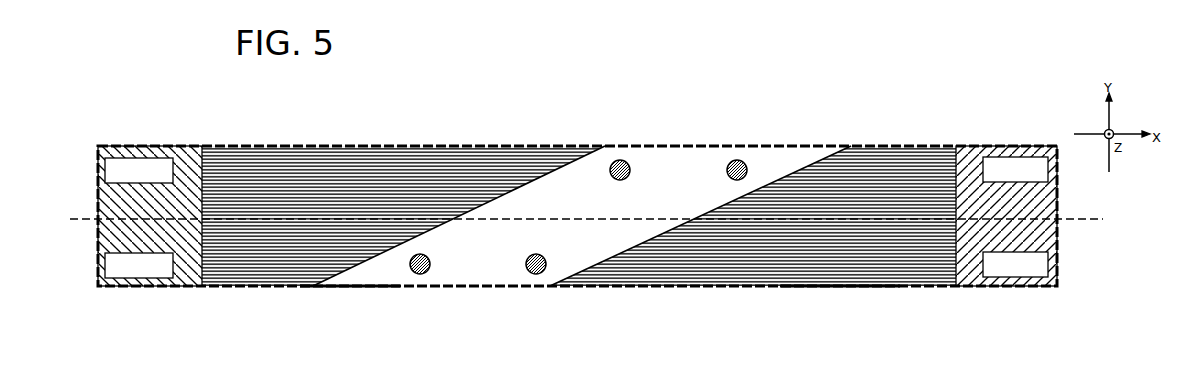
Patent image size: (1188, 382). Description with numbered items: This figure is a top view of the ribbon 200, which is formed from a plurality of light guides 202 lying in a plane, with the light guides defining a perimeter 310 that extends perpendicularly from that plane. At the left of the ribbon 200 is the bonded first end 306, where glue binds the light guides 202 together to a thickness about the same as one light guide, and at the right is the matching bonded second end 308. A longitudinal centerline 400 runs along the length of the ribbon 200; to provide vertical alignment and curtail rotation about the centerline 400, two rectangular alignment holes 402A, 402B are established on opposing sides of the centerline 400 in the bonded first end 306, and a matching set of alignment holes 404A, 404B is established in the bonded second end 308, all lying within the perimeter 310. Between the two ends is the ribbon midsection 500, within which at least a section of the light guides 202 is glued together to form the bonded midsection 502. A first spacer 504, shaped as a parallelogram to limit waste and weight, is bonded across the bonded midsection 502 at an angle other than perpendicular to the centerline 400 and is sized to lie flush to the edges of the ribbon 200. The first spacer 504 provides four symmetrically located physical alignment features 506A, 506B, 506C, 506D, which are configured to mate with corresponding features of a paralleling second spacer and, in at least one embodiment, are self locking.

The ribbon 200 is at (781, 95).
The light guides 202 is at (833, 288).
The bonded first end 306 is at (177, 146).
The bonded second end 308 is at (984, 148).
The perimeter 310 is at (344, 288).
The longitudinal centerline 400 is at (596, 206).
The alignment hole 402A is at (156, 180).
The alignment hole 402B is at (156, 275).
The alignment hole 404A is at (1034, 179).
The alignment hole 404B is at (1034, 274).
The ribbon midsection 500 is at (847, 137).
The bonded midsection 502 is at (566, 266).
The first spacer 504 is at (663, 208).
The physical alignment feature 506A is at (420, 275).
The physical alignment feature 506B is at (620, 160).
The physical alignment feature 506C is at (536, 275).
The physical alignment feature 506D is at (737, 160).